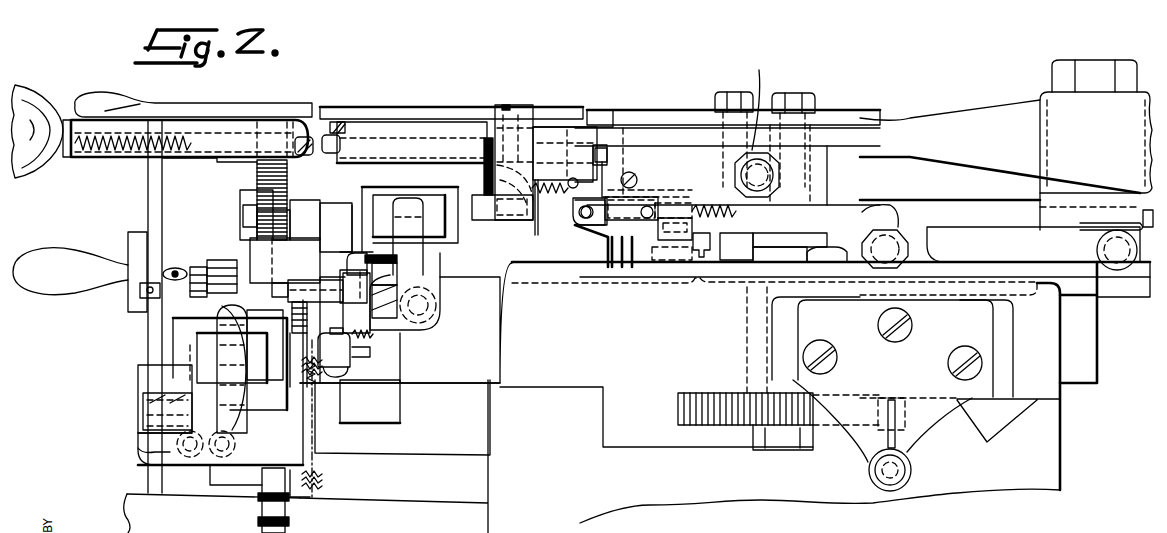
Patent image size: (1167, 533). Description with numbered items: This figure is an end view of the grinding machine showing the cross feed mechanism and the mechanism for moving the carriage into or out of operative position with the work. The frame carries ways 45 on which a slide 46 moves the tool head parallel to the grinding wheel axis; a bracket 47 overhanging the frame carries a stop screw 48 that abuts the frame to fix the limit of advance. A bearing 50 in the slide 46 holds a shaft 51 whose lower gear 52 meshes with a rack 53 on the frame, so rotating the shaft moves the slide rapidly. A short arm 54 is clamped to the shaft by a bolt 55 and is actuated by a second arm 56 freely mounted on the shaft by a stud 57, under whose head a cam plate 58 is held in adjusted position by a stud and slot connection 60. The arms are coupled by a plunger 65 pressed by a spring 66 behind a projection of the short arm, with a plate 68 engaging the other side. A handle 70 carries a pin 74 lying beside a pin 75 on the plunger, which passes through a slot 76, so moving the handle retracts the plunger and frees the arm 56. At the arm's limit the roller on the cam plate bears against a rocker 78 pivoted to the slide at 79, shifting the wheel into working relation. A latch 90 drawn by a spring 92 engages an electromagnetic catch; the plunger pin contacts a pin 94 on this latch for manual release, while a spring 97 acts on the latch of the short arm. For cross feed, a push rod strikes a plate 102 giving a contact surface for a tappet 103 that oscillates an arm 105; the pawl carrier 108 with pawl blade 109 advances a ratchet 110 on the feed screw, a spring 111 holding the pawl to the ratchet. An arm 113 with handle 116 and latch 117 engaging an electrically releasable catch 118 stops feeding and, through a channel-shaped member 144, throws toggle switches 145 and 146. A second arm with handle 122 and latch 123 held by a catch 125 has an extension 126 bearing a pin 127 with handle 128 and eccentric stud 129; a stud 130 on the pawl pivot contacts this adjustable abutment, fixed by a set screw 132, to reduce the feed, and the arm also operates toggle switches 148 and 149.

The ways 45 is at (1015, 428).
The slide 46 is at (1045, 385).
The bracket 47 is at (957, 485).
The stop screw 48 is at (885, 500).
The bearing 50 is at (746, 300).
The shaft 51 is at (785, 343).
The gear 52 is at (710, 432).
The rack 53 is at (950, 428).
The short arm 54 is at (668, 155).
The bolt 55 is at (764, 101).
The second arm 56 is at (403, 122).
The stud 57 is at (790, 93).
The cam plate 58 is at (720, 92).
The stud and slot connection 60 is at (735, 100).
The plunger 65 is at (320, 115).
The spring 66 is at (120, 158).
The plate 68 is at (583, 232).
The handle 70 is at (228, 104).
The pin 74 is at (542, 125).
The pin 75 is at (492, 115).
The slot 76 is at (480, 120).
The rocker 78 is at (995, 118).
The pivot 79 is at (1082, 64).
The latch 90 is at (820, 511).
The spring 92 is at (547, 200).
The pin 94 is at (480, 142).
The spring 97 is at (715, 222).
The plate 102 is at (320, 532).
The tappet 103 is at (258, 527).
The arm 105 is at (340, 202).
The pawl carrier 108 is at (243, 208).
The pawl blade 109 is at (245, 194).
The ratchet 110 is at (292, 178).
The spring 111 is at (312, 202).
The arm 113 is at (300, 293).
The handle 116 is at (350, 268).
The latch 117 is at (420, 232).
The electrically releasable catch 118 is at (432, 196).
The handle 122 is at (138, 425).
The latch 123 is at (240, 330).
The electrically releasable catch 125 is at (180, 340).
The extension 126 is at (178, 306).
The pin 127 is at (147, 300).
The handle 128 is at (128, 306).
The eccentric stud 129 is at (198, 267).
The stud 130 is at (220, 258).
The set screw 132 is at (174, 268).
The channel-shaped member 144 is at (423, 272).
The toggle switch 145 is at (408, 333).
The toggle switch 146 is at (437, 305).
The toggle switch 148 is at (160, 455).
The toggle switch 149 is at (236, 445).